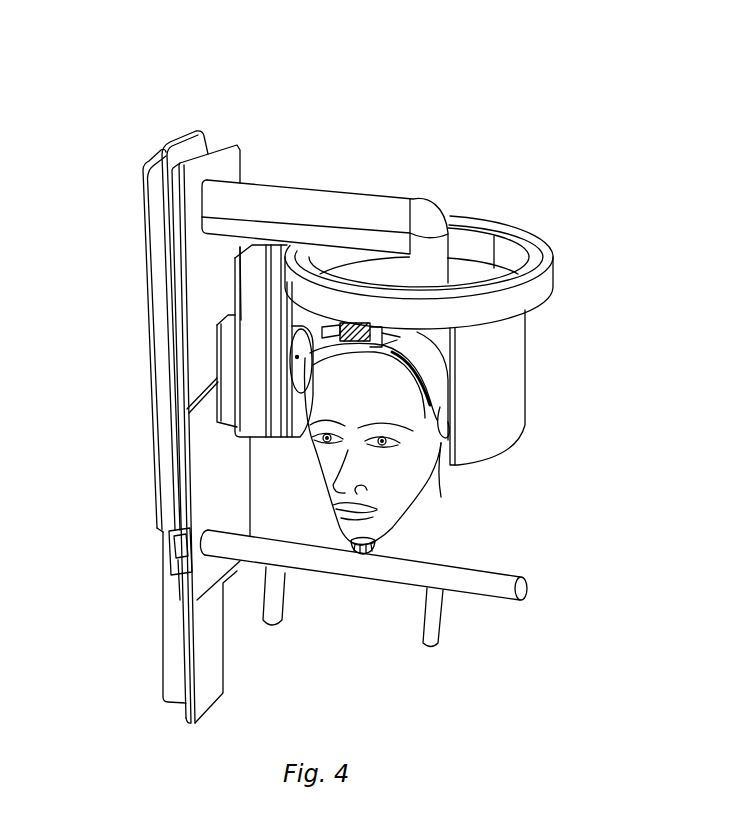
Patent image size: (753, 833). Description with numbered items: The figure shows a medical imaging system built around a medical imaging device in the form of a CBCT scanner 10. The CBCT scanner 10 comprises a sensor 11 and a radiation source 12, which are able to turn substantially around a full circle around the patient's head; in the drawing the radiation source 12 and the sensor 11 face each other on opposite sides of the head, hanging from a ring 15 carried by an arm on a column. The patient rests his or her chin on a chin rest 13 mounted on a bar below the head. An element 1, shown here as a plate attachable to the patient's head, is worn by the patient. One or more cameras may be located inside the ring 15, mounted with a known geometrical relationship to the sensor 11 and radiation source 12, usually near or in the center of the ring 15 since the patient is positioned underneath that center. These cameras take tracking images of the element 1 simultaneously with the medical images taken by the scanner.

The CBCT scanner 10 is at (408, 130).
The ring 15 is at (542, 217).
The sensor 11 is at (550, 367).
The radiation source 12 is at (241, 353).
The element 1 is at (300, 316).
The chin rest 13 is at (399, 542).